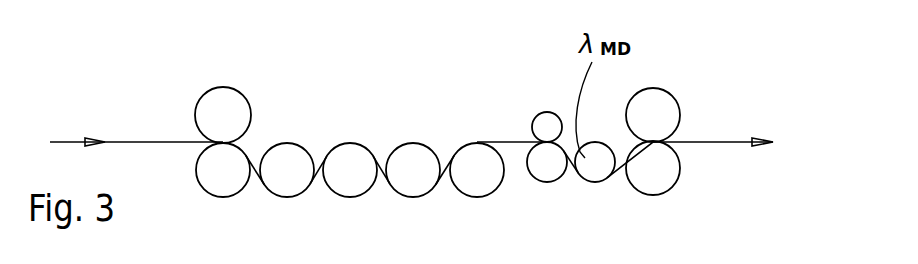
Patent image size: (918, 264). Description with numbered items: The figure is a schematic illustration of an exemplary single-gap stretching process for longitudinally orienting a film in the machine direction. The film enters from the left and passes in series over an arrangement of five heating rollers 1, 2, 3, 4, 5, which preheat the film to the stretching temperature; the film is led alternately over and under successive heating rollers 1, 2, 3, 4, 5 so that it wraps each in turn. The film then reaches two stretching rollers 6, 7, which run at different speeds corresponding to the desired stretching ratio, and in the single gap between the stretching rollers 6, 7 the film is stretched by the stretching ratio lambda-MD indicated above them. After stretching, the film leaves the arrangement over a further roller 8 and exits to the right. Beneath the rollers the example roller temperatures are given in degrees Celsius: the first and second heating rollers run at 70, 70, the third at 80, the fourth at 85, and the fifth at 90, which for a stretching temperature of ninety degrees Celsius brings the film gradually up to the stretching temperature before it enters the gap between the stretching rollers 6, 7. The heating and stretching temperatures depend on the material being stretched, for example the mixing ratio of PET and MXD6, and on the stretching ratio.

The heating roller 1 is at (223, 142).
The heating roller 2 is at (287, 170).
The heating roller 3 is at (350, 170).
The heating roller 4 is at (413, 170).
The heating roller 5 is at (477, 170).
The stretching roller 6 is at (547, 147).
The stretching roller 7 is at (595, 162).
The roller 8 (nip roller) 8 is at (653, 141).
The roller temperature 70 C 70 is at (254, 166).
The roller temperature 80 C 80 is at (350, 194).
The roller temperature 85 C 85 is at (413, 194).
The roller temperature 90 C 90 is at (508, 178).